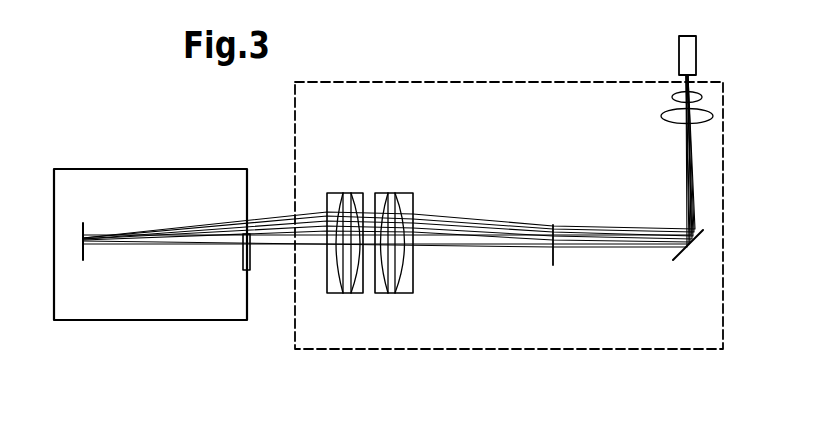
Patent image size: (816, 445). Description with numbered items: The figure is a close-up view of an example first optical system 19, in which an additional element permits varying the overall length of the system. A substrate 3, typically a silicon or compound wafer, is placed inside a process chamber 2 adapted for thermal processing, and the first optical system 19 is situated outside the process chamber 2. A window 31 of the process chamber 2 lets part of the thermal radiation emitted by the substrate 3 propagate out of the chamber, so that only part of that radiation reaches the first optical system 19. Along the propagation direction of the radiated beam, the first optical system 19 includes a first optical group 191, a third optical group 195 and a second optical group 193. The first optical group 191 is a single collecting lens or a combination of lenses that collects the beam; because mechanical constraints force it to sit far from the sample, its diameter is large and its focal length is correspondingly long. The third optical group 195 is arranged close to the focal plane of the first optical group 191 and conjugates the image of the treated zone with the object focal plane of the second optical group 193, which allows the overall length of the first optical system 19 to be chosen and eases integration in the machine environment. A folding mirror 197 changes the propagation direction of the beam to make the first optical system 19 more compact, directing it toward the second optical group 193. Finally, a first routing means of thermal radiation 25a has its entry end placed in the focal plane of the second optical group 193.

The process chamber 2 is at (183, 168).
The substrate 3 is at (85, 229).
The window 31 is at (253, 262).
The first optical group 191 is at (322, 182).
The second optical group 193 is at (653, 88).
The third optical group 195 is at (553, 257).
The folding mirror 197 is at (686, 252).
The first routing means of thermal radiation 25a is at (688, 53).
The first optical system 19 is at (693, 350).